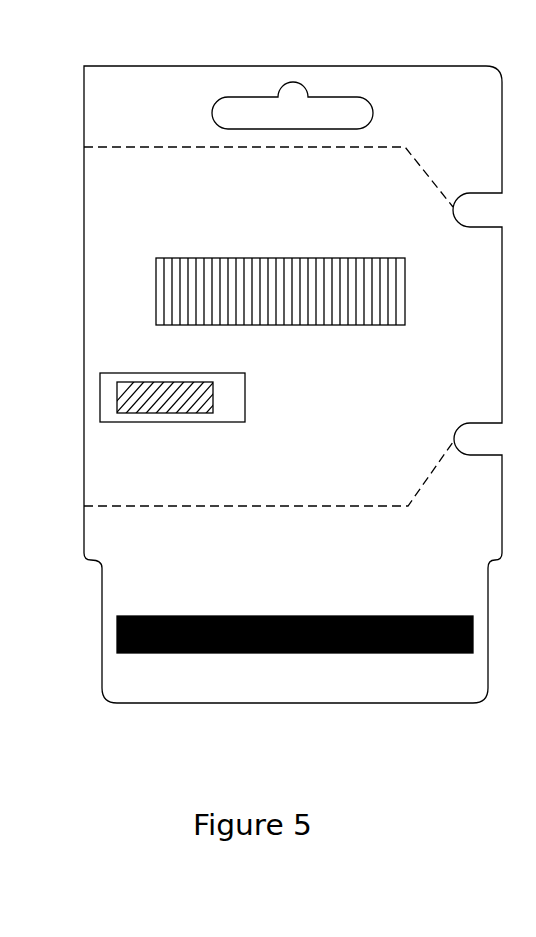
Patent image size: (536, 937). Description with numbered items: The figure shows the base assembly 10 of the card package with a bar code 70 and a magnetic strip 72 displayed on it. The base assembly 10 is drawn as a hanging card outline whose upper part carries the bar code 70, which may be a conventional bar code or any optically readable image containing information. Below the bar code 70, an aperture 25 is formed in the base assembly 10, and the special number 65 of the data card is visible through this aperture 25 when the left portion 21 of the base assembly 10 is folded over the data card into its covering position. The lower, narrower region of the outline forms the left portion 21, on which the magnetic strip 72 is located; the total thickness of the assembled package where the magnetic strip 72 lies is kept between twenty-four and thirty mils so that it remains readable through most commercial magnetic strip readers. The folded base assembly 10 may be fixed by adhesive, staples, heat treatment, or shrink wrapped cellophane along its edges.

The base assembly 10 is at (177, 49).
The left portion 21 is at (293, 631).
The bar code 70 is at (280, 278).
The aperture 25 is at (245, 379).
The special number 65 is at (147, 413).
The magnetic strip 72 is at (295, 623).